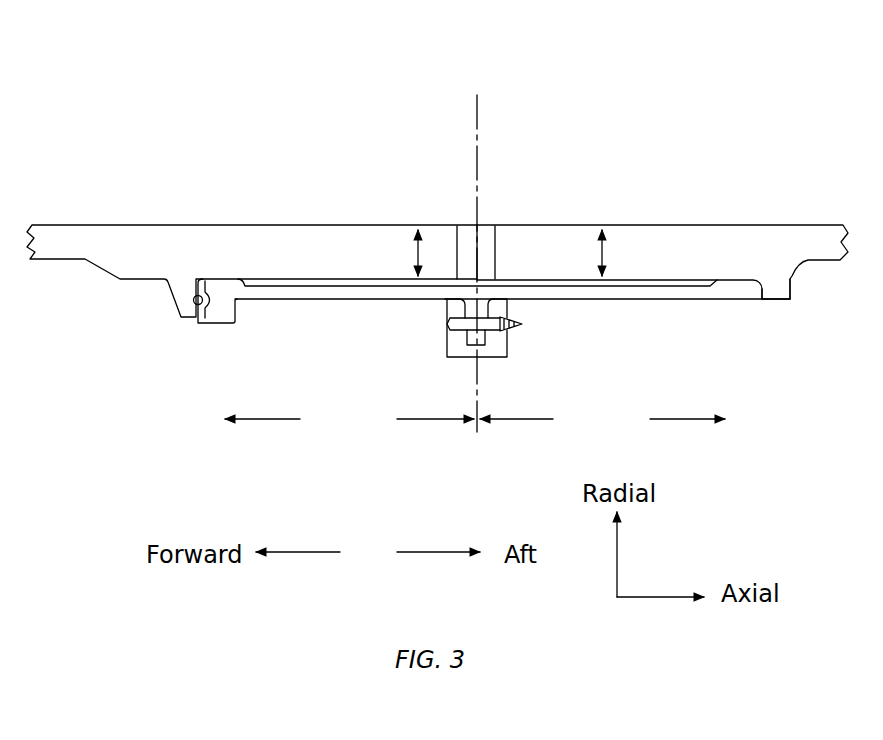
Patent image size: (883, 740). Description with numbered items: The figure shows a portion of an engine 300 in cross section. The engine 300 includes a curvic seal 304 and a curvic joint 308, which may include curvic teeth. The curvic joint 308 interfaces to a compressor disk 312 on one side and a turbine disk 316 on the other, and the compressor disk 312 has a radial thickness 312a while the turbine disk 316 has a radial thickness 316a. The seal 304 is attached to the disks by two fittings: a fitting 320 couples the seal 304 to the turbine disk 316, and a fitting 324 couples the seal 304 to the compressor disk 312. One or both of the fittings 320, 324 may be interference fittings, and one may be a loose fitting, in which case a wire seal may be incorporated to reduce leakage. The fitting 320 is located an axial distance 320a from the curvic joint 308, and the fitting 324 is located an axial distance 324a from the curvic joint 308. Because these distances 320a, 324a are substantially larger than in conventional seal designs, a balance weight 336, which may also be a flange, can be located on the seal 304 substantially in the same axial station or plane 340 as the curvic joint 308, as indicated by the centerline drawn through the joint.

The engine 300 is at (766, 113).
The curvic seal 304 is at (348, 292).
The curvic joint 308 is at (497, 247).
The compressor disk 312 is at (277, 240).
The thickness of compressor disk 312a is at (402, 240).
The turbine disk 316 is at (693, 240).
The thickness of turbine disk 316a is at (617, 240).
The fitting 320 is at (745, 299).
The distance 320a is at (602, 420).
The fitting 324 is at (218, 292).
The distance 324a is at (349, 420).
The balance weight 336 is at (507, 343).
The axial station/plane 340 is at (477, 115).